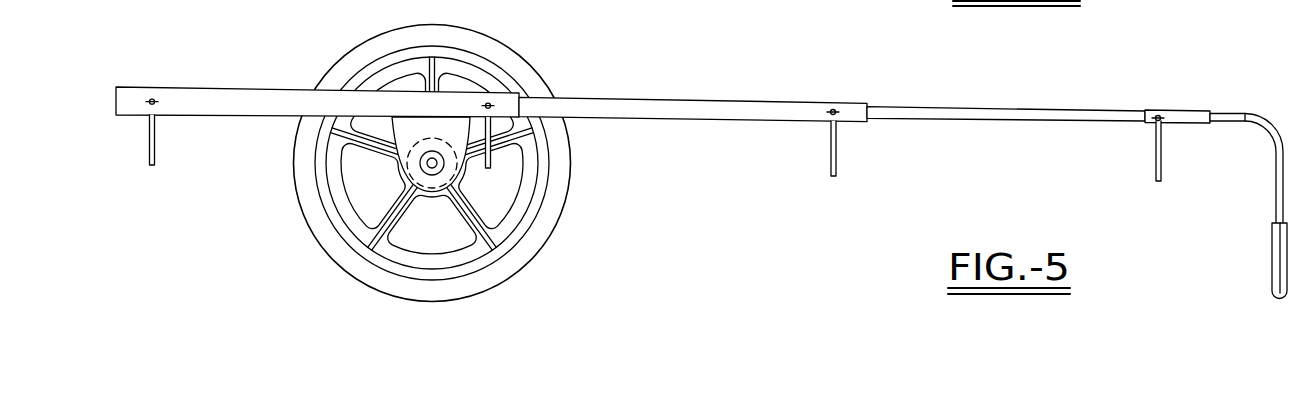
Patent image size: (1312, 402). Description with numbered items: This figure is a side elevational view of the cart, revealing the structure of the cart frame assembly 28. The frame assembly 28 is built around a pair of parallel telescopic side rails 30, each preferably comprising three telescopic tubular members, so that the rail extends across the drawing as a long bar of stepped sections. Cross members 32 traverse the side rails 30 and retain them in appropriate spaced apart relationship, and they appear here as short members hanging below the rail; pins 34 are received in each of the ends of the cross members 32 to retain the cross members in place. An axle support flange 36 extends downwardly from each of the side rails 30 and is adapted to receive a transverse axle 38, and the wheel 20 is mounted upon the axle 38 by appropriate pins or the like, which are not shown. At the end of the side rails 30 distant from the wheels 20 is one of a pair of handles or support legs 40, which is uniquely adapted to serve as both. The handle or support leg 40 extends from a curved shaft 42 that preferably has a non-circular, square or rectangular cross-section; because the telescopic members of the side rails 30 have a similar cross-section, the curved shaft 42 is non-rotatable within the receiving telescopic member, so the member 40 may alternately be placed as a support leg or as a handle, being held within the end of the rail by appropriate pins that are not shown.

The wheel 20 is at (503, 47).
The cart frame assembly 28 is at (663, 101).
The telescopic side rail 30 is at (692, 122).
The cross member 32 is at (155, 155).
The pin 34 is at (158, 100).
The axle support flange 36 is at (447, 170).
The axle 38 is at (425, 163).
The handle or support leg 40 is at (1273, 259).
The curved shaft 42 is at (1228, 125).